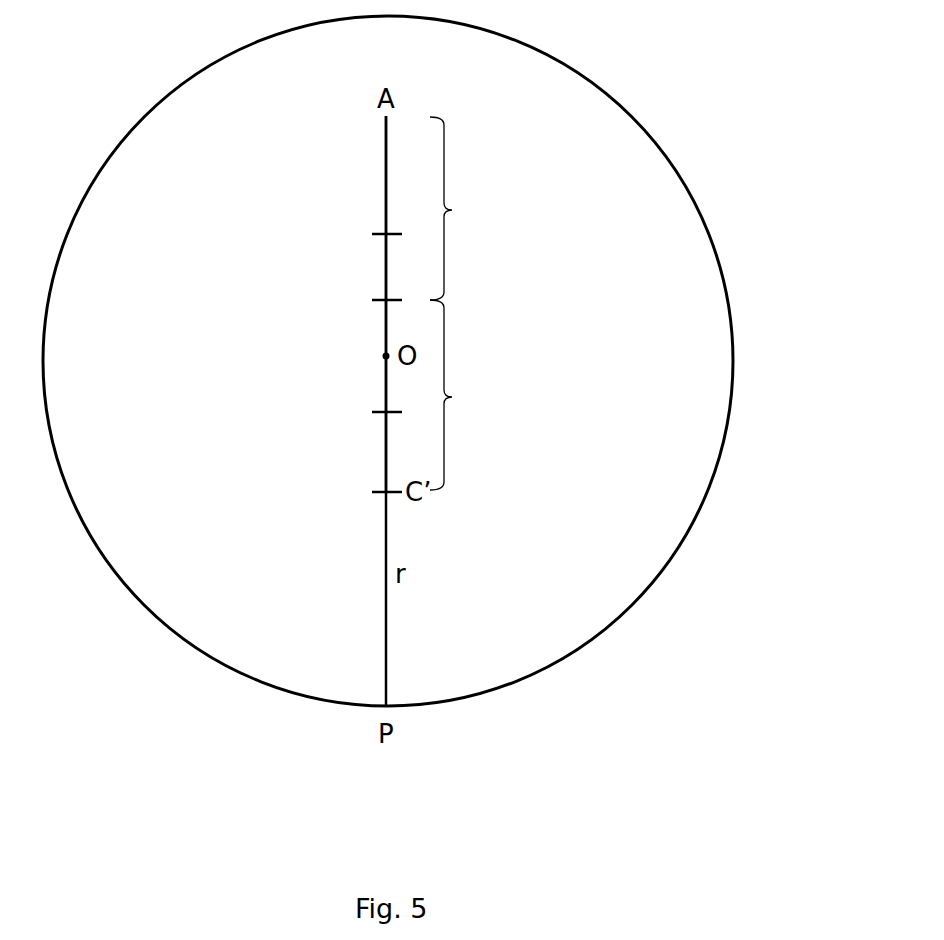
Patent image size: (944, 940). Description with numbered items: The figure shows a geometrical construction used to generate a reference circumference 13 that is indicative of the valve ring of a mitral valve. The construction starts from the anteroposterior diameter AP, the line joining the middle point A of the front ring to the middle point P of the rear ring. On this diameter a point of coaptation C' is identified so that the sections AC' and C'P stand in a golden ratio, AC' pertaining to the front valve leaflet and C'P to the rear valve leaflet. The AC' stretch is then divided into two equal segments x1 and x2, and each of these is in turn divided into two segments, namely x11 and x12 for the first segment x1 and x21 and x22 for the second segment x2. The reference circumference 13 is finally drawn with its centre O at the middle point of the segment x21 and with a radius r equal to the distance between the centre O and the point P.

The reference circumference 13 is at (152, 112).
The first segment of the AC' stretch x1 is at (452, 210).
The second segment of the AC' stretch x2 is at (452, 397).
The first sub-segment of segment x1 x11 is at (361, 175).
The second sub-segment of segment x1 x12 is at (360, 267).
The first sub-segment of segment x2 x21 is at (360, 356).
The second sub-segment of segment x2 x22 is at (360, 452).